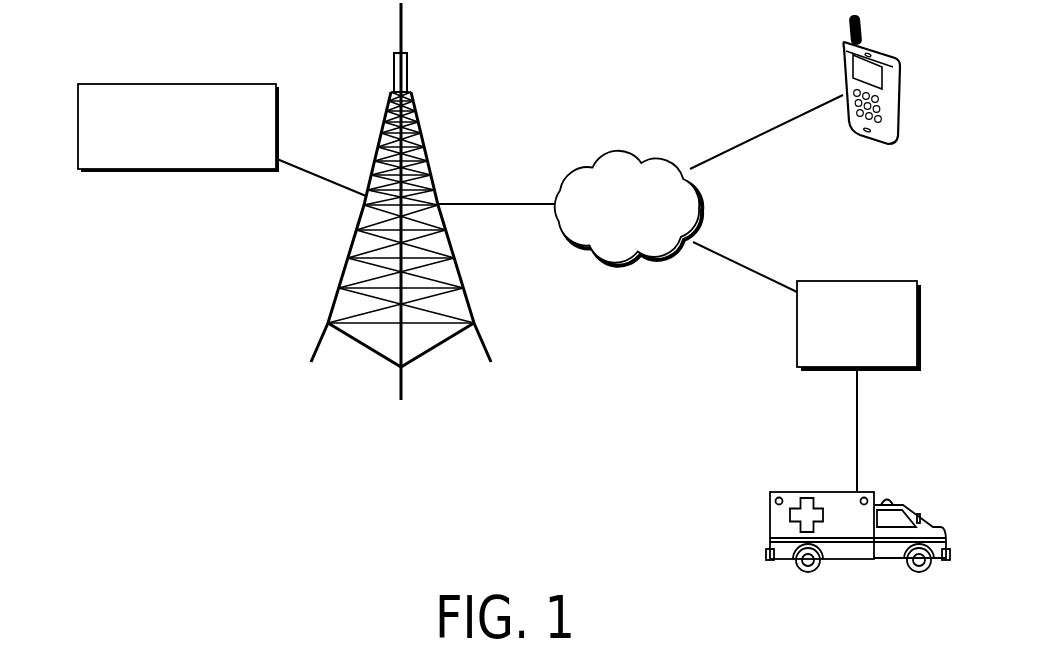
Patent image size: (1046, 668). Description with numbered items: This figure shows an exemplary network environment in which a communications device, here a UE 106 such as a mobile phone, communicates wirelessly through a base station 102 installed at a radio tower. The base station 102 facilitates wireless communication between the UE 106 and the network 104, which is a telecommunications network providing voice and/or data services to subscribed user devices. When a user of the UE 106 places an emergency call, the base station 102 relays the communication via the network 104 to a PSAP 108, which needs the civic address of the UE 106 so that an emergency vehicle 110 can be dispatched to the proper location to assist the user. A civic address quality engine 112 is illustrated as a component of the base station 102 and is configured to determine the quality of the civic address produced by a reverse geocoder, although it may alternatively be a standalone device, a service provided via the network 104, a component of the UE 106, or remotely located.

The base station 102 is at (345, 267).
The network 104 is at (605, 152).
The UE 106 is at (885, 50).
The PSAP 108 is at (858, 281).
The emergency responder / ambulance 110 is at (770, 520).
The civic address quality engine 112 is at (138, 171).